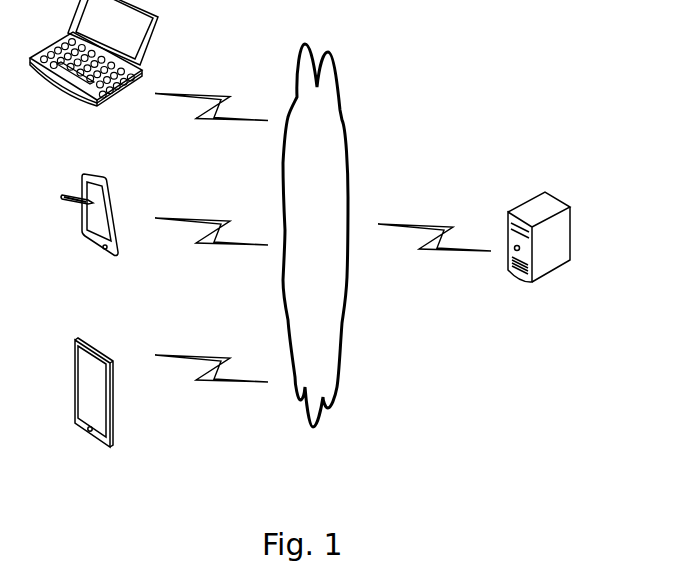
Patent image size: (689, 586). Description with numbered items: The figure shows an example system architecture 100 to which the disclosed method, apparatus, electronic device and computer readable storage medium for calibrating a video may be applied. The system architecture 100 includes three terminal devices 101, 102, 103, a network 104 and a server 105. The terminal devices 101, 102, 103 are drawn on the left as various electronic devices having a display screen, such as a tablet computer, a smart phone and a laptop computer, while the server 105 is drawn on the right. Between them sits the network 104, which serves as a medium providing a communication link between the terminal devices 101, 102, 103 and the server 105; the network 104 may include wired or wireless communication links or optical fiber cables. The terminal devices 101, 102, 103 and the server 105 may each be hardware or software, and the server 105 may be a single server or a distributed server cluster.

The system architecture 100 is at (565, 24).
The terminal device 101 is at (94, 412).
The terminal device 102 is at (89, 230).
The terminal device 103 is at (94, 67).
The network 104 is at (315, 235).
The server 105 is at (539, 256).